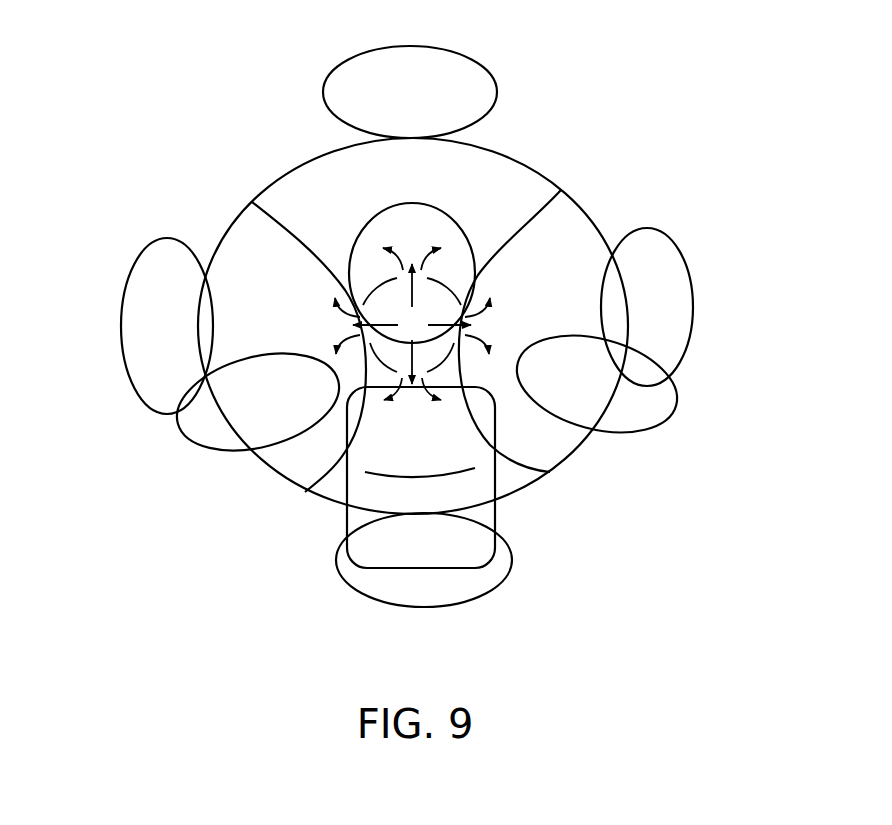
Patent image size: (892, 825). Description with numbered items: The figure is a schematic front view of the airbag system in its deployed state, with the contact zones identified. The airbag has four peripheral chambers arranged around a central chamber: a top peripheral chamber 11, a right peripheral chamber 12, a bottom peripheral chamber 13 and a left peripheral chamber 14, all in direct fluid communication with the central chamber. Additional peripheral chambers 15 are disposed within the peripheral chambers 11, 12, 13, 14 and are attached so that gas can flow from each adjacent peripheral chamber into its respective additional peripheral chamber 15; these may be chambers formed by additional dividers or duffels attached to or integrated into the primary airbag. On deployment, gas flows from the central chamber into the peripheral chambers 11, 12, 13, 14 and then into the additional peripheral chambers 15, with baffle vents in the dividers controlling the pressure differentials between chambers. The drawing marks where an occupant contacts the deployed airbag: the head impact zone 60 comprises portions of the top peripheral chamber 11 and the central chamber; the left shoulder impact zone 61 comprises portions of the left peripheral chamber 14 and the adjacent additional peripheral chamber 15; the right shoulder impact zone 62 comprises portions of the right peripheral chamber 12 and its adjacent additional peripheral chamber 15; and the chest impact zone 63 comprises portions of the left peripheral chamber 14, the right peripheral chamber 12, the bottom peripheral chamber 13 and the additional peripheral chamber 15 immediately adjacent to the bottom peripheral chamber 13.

The top peripheral chamber 11 is at (345, 175).
The right peripheral chamber 12 is at (565, 233).
The bottom peripheral chamber 13 is at (500, 473).
The left peripheral chamber 14 is at (257, 245).
The additional peripheral chambers 15 is at (465, 87).
The head impact zone 60 is at (438, 232).
The left shoulder impact zone 61 is at (198, 427).
The right shoulder impact zone 62 is at (650, 408).
The chest impact zone 63 is at (487, 512).